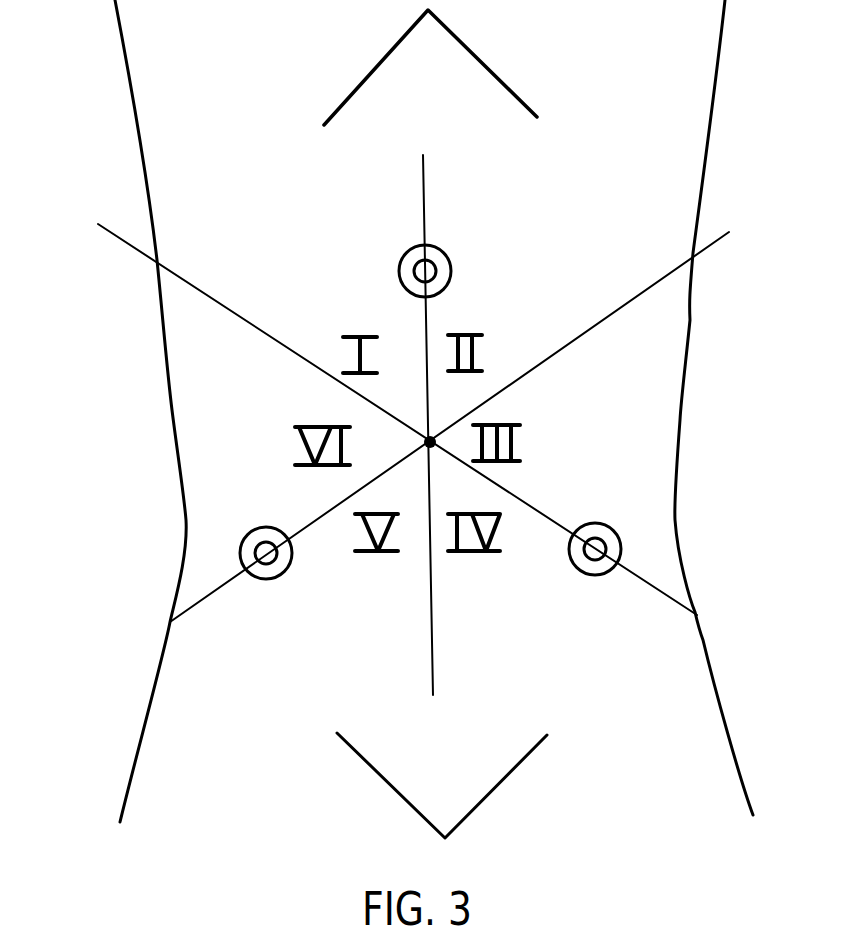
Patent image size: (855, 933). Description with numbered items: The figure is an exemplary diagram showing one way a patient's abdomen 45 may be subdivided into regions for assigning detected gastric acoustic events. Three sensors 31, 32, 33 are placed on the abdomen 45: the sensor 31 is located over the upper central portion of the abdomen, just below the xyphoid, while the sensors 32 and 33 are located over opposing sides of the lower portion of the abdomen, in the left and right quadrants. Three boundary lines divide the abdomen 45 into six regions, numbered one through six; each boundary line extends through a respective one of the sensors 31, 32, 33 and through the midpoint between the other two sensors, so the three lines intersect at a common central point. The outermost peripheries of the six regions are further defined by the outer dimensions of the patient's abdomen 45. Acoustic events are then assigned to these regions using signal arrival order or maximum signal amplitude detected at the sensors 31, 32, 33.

The sensor 31 is at (452, 277).
The sensor 32 is at (578, 572).
The sensor 33 is at (292, 563).
The abdomen 45 is at (225, 442).